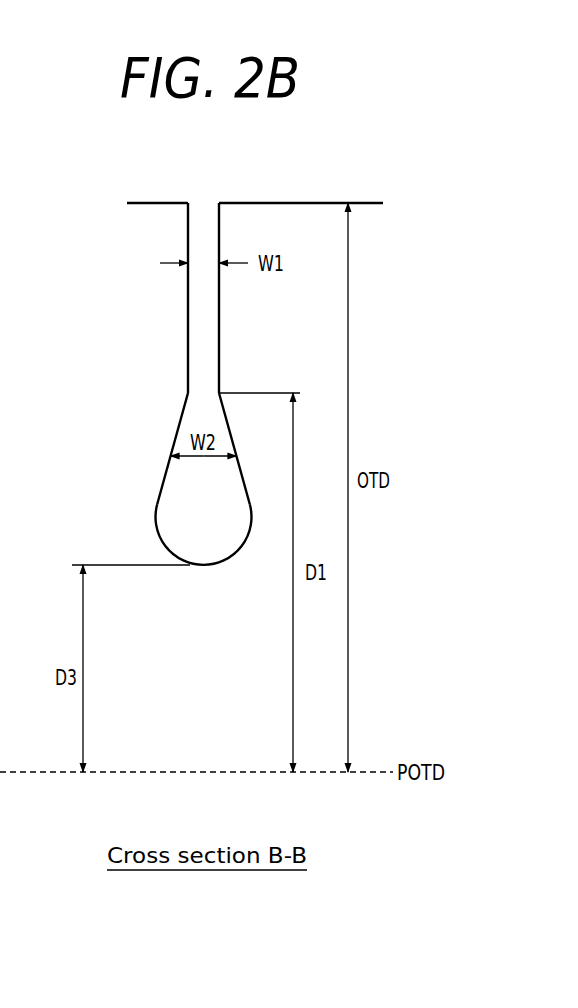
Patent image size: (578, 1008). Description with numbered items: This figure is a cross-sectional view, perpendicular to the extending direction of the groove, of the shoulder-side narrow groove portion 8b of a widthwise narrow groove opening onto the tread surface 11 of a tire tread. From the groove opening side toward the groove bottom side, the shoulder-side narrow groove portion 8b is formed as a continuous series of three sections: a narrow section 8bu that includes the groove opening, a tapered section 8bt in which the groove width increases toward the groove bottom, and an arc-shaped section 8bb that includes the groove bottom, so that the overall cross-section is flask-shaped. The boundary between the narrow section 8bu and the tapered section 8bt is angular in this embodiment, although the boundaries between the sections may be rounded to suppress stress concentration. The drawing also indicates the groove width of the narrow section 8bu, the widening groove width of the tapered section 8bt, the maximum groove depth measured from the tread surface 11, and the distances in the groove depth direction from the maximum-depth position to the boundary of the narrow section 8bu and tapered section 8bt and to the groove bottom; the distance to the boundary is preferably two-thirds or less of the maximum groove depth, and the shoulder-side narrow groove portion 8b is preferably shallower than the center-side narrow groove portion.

The shoulder-side narrow groove portion 8b is at (173, 360).
The tread surface 11 is at (268, 202).
The narrow section 8bu is at (205, 322).
The tapered section 8bt is at (205, 483).
The arc-shaped section 8bb is at (205, 549).